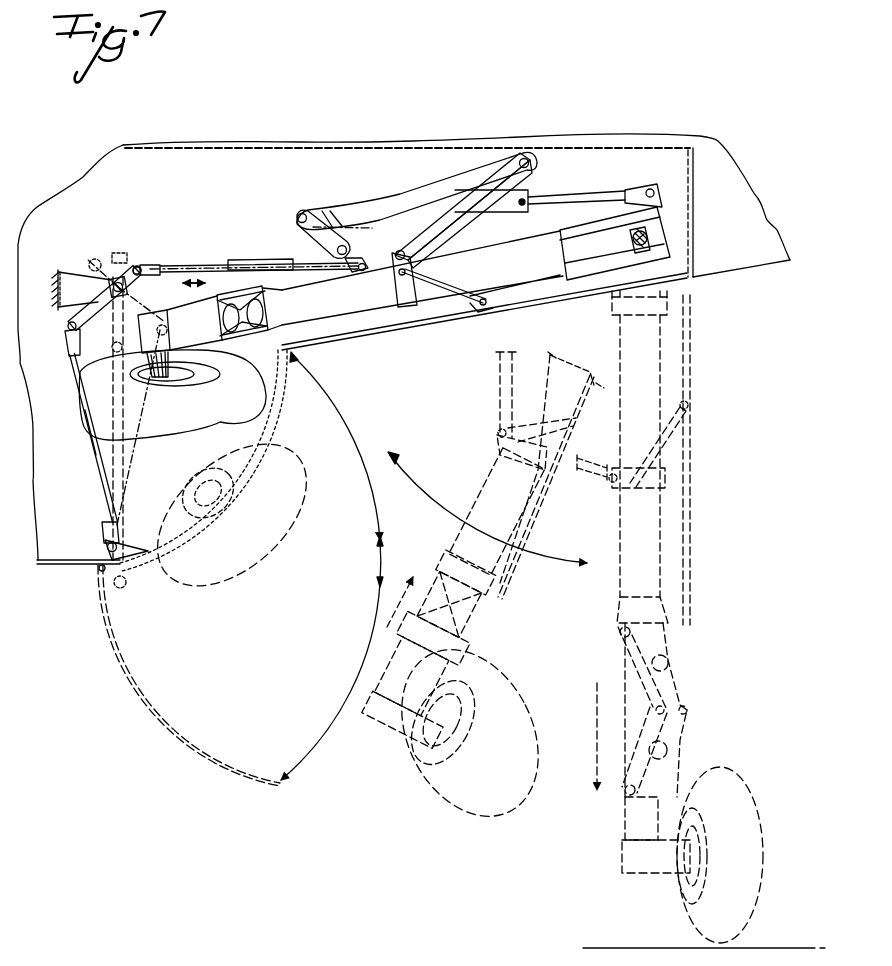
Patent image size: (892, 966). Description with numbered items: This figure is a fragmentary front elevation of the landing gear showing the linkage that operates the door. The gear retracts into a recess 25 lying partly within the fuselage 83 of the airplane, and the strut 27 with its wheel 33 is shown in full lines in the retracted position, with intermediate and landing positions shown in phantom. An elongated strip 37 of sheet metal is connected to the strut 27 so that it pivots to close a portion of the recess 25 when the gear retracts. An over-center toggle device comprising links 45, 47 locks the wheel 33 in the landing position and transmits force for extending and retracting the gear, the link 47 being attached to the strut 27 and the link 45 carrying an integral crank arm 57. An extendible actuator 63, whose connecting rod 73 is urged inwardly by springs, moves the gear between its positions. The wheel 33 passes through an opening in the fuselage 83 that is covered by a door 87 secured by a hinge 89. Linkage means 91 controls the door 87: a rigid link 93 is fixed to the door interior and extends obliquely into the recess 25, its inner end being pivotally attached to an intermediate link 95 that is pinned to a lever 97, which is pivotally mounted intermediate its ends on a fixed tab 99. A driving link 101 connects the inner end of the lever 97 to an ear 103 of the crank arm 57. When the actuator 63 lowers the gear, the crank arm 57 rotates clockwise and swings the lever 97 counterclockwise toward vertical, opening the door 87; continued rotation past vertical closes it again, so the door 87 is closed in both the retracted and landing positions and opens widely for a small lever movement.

The recess 25 is at (404, 347).
The strut 27 is at (518, 288).
The wheel 33 is at (177, 415).
The elongated strip 37 is at (540, 512).
The link 45 is at (445, 202).
The link 47 is at (450, 234).
The crank arm 57 is at (300, 220).
The extendible actuator 63 is at (402, 198).
The connecting rod 73 is at (580, 193).
The fuselage 83 is at (54, 566).
The door 87 is at (283, 391).
The hinge 89 is at (100, 571).
The linkage means 91 is at (71, 371).
The rigid link 93 is at (108, 547).
The intermediate link 95 is at (97, 460).
The lever 97 is at (68, 323).
The fixed tab 99 is at (78, 284).
The driving link 101 is at (206, 266).
The ear 103 is at (269, 318).